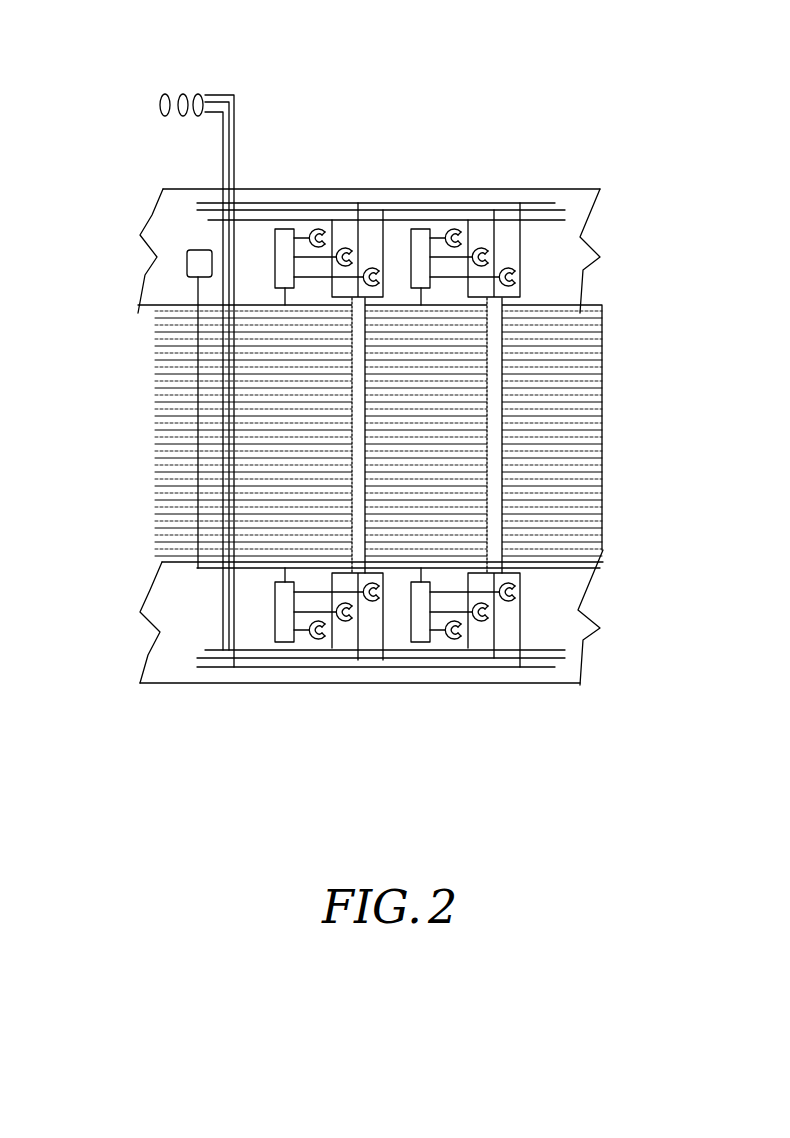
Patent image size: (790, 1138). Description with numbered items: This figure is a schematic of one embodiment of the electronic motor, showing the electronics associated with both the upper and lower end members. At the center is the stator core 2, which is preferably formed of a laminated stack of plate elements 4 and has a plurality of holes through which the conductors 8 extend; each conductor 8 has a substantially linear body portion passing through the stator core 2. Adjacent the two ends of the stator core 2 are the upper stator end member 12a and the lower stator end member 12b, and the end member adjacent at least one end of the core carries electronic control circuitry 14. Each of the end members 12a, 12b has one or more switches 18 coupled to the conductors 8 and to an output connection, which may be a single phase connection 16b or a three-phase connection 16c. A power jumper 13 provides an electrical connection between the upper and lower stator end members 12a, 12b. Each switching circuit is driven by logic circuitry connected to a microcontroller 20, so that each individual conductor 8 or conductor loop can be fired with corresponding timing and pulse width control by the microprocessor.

The stator core 2 is at (615, 331).
The plate elements 4 is at (590, 403).
The conductors 8 is at (590, 495).
The upper stator end member 12a is at (513, 189).
The lower stator end member 12b is at (470, 683).
The power jumper 13 is at (222, 413).
The electronic control circuitry 14 is at (418, 203).
The single phase connection 16b is at (186, 94).
The 3-phase connection 16c is at (170, 93).
The switches 18 is at (407, 228).
The microcontroller 20 is at (187, 262).